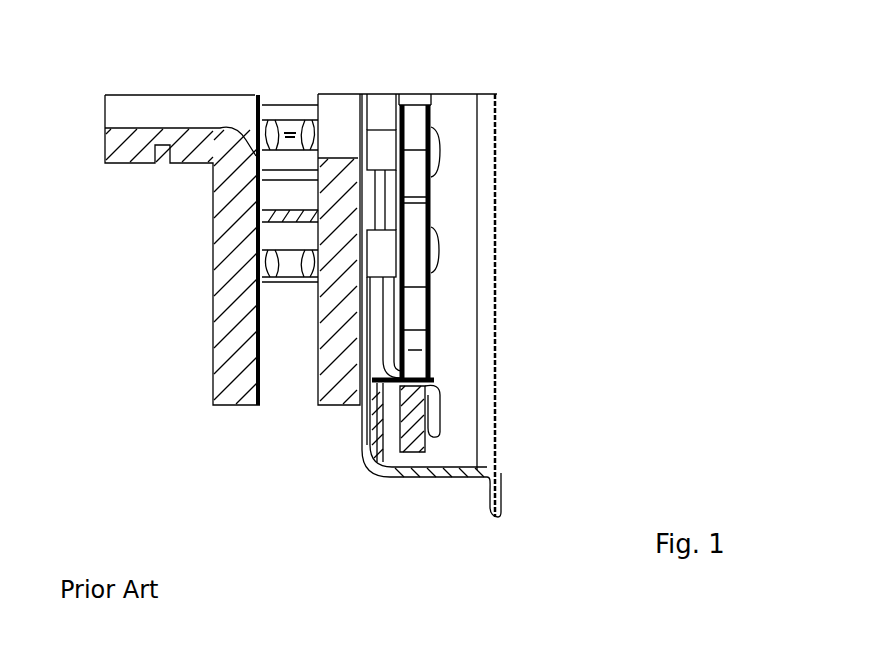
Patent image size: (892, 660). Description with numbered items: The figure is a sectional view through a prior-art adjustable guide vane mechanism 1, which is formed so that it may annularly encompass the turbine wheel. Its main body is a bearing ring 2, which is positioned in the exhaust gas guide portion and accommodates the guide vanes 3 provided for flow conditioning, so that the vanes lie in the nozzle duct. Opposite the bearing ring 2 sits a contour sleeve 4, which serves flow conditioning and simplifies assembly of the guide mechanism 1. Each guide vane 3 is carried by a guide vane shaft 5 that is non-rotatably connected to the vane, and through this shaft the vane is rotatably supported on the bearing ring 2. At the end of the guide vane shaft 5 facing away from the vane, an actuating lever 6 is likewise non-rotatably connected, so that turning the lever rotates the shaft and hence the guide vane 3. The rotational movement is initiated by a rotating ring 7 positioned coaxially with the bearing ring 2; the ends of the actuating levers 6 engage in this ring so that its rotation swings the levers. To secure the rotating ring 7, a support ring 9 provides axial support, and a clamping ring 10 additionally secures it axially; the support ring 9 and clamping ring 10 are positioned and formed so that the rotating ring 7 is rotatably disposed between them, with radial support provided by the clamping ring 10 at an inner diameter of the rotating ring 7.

The guide mechanism 1 is at (637, 176).
The bearing ring 2 is at (325, 386).
The guide vanes 3 is at (290, 118).
The contour sleeve 4 is at (226, 290).
The guide vane shaft 5 is at (377, 125).
The actuating lever 6 is at (419, 120).
The rotating ring 7 is at (413, 473).
The support ring 9 is at (502, 475).
The clamping ring 10 is at (440, 384).